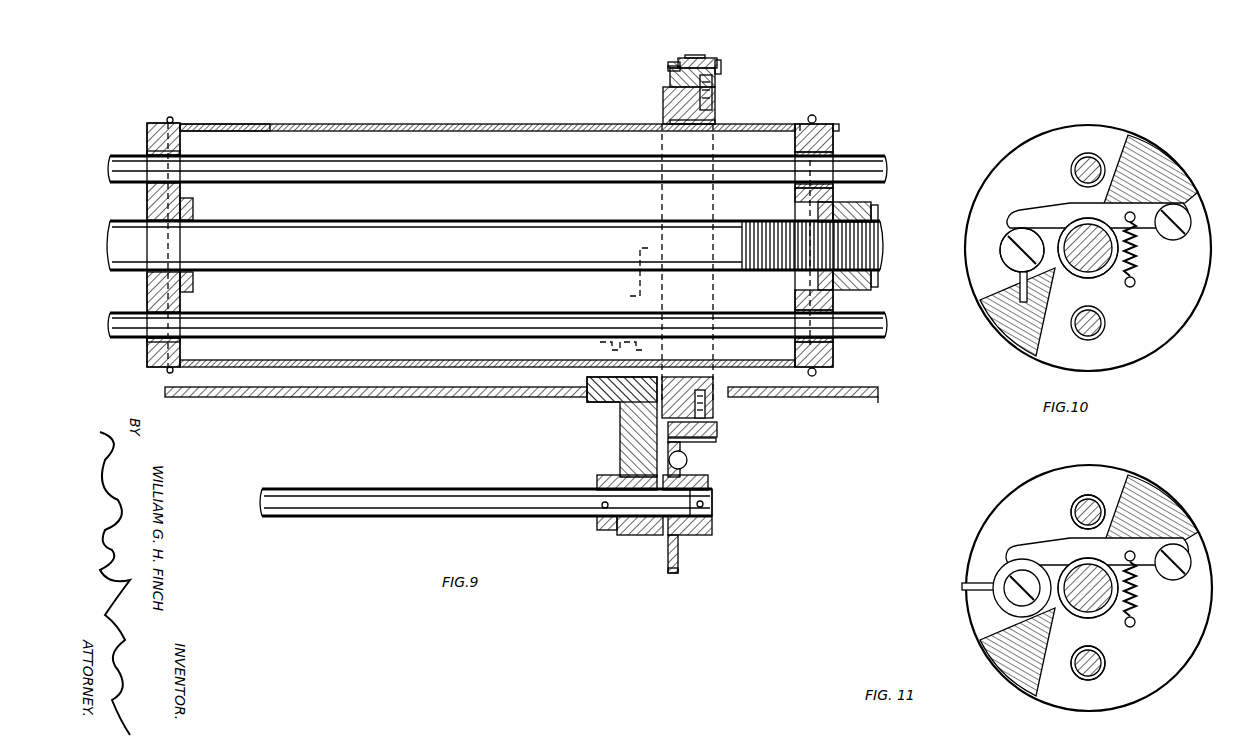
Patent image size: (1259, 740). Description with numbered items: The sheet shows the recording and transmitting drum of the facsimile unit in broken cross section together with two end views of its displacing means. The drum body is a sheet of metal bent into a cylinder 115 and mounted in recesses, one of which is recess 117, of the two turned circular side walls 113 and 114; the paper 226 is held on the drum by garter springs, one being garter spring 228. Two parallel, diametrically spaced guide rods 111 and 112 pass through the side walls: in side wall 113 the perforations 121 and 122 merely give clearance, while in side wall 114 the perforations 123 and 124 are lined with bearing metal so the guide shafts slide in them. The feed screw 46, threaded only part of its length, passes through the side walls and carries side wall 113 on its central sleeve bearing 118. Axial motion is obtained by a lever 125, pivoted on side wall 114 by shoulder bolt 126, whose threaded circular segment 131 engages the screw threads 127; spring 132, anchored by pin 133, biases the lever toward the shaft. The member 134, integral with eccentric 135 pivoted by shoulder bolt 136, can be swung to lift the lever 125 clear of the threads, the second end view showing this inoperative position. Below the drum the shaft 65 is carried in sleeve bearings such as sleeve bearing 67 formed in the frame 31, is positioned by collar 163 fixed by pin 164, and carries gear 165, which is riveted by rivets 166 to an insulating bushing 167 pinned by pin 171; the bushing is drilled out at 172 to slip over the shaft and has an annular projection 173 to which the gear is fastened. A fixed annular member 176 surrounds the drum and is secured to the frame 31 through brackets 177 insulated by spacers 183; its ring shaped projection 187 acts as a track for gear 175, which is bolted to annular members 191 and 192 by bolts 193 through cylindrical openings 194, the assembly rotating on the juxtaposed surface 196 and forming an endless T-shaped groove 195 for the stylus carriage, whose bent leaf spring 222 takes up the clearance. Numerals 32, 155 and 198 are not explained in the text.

In FIG. 9, the frame 31 is at (868, 390).
In FIG. 9, the clip 32 is at (836, 126).
In FIG. 9, the feed screw 46 is at (475, 222).
In FIG. 10, the feed screw 46 is at (1092, 262).
In FIG. 11, the feed screw 46 is at (1094, 603).
In FIG. 9, the shaft 65 is at (300, 489).
In FIG. 9, the sleeve bearing 67 is at (632, 531).
In FIG. 9, the guide rod 111 is at (884, 160).
In FIG. 10, the guide rod 111 is at (1100, 166).
In FIG. 11, the guide rod 111 is at (1098, 506).
In FIG. 9, the guide rod 112 is at (884, 316).
In FIG. 10, the guide rod 112 is at (1095, 328).
In FIG. 11, the guide rod 112 is at (1075, 668).
In FIG. 9, the side wall 113 is at (147, 130).
In FIG. 9, the side wall 114 is at (833, 138).
In FIG. 10, the side wall 114 is at (1166, 332).
In FIG. 11, the side wall 114 is at (1145, 486).
In FIG. 9, the cylinder 115 is at (468, 124).
In FIG. 9, the recess 117 is at (800, 124).
In FIG. 9, the central sleeve bearing 118 is at (195, 218).
In FIG. 9, the perforation 121 is at (147, 152).
In FIG. 9, the perforation 122 is at (148, 345).
In FIG. 9, the perforation 123 is at (833, 153).
In FIG. 11, the perforation 123 is at (1074, 506).
In FIG. 9, the perforation 124 is at (833, 344).
In FIG. 11, the perforation 124 is at (1106, 661).
In FIG. 9, the lever 125 is at (860, 203).
In FIG. 10, the lever 125 is at (1068, 210).
In FIG. 11, the lever 125 is at (1045, 548).
In FIG. 9, the shoulder bolt 126 is at (878, 282).
In FIG. 10, the shoulder bolt 126 is at (1186, 216).
In FIG. 11, the shoulder bolt 126 is at (1186, 556).
In FIG. 9, the screw threads 127 is at (768, 214).
In FIG. 10, the circular segment 131 is at (1096, 224).
In FIG. 11, the circular segment 131 is at (1096, 562).
In FIG. 10, the spring 132 is at (1138, 254).
In FIG. 11, the spring 132 is at (1138, 602).
In FIG. 10, the pin 133 is at (1136, 282).
In FIG. 11, the pin 133 is at (1136, 622).
In FIG. 10, the member 134 is at (1020, 290).
In FIG. 11, the member 134 is at (975, 584).
In FIG. 11, the eccentric 135 is at (1004, 606).
In FIG. 10, the shoulder bolt 136 is at (1010, 244).
In FIG. 11, the shoulder bolt 136 is at (1030, 600).
In FIG. 10, the pivot ring 155 is at (1010, 262).
In FIG. 9, the collar 163 is at (597, 478).
In FIG. 9, the pin 164 is at (597, 521).
In FIG. 9, the gear 165 is at (680, 568).
In FIG. 9, the rivets 166 is at (688, 461).
In FIG. 9, the insulating bushing 167 is at (708, 479).
In FIG. 9, the pin 171 is at (713, 502).
In FIG. 9, the drilled-out bore 172 is at (712, 522).
In FIG. 9, the annular projection 173 is at (678, 550).
In FIG. 9, the gear 175 is at (678, 60).
In FIG. 9, the annular member 176 is at (665, 106).
In FIG. 9, the brackets 177 is at (648, 292).
In FIG. 9, the spacers 183 is at (585, 382).
In FIG. 9, the ring shaped projection 187 is at (670, 79).
In FIG. 9, the annular member 191 is at (690, 58).
In FIG. 9, the annular member 192 is at (665, 98).
In FIG. 9, the bolts 193 is at (721, 66).
In FIG. 9, the cylindrical openings 194 is at (700, 57).
In FIG. 9, the T-shaped groove 195 is at (713, 88).
In FIG. 9, the juxtaposed surface 196 is at (668, 70).
In FIG. 9, the lower bearing block 198 is at (713, 405).
In FIG. 9, the bent leaf spring 222 is at (168, 119).
In FIG. 9, the paper 226 is at (262, 124).
In FIG. 9, the garter spring 228 is at (815, 116).